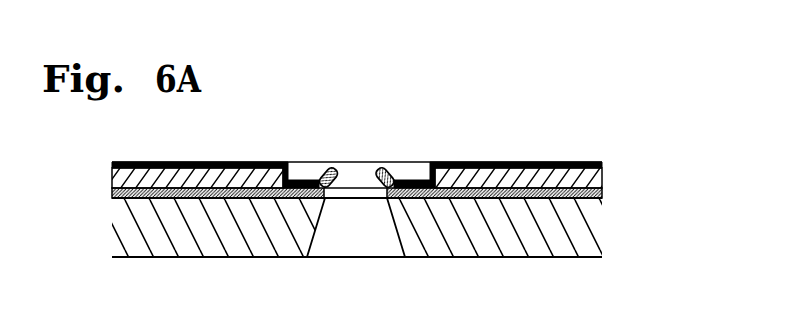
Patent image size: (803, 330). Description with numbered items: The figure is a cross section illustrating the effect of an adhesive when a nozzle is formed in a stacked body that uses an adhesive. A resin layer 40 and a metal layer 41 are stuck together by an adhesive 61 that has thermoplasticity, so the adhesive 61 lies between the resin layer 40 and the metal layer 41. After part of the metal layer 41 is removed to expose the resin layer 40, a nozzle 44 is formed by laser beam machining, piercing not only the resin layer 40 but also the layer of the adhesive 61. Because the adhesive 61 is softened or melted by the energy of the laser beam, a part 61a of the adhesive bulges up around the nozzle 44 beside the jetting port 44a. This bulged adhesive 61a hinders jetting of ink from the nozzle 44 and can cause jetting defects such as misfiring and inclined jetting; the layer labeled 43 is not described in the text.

The resin layer 40 is at (582, 237).
The metal layer 41 is at (592, 177).
The electrode layer 43 is at (412, 182).
The nozzle 44 is at (324, 190).
The jetting port 44a is at (360, 180).
The adhesive 61 is at (592, 193).
The part of the adhesive 61a is at (333, 167).